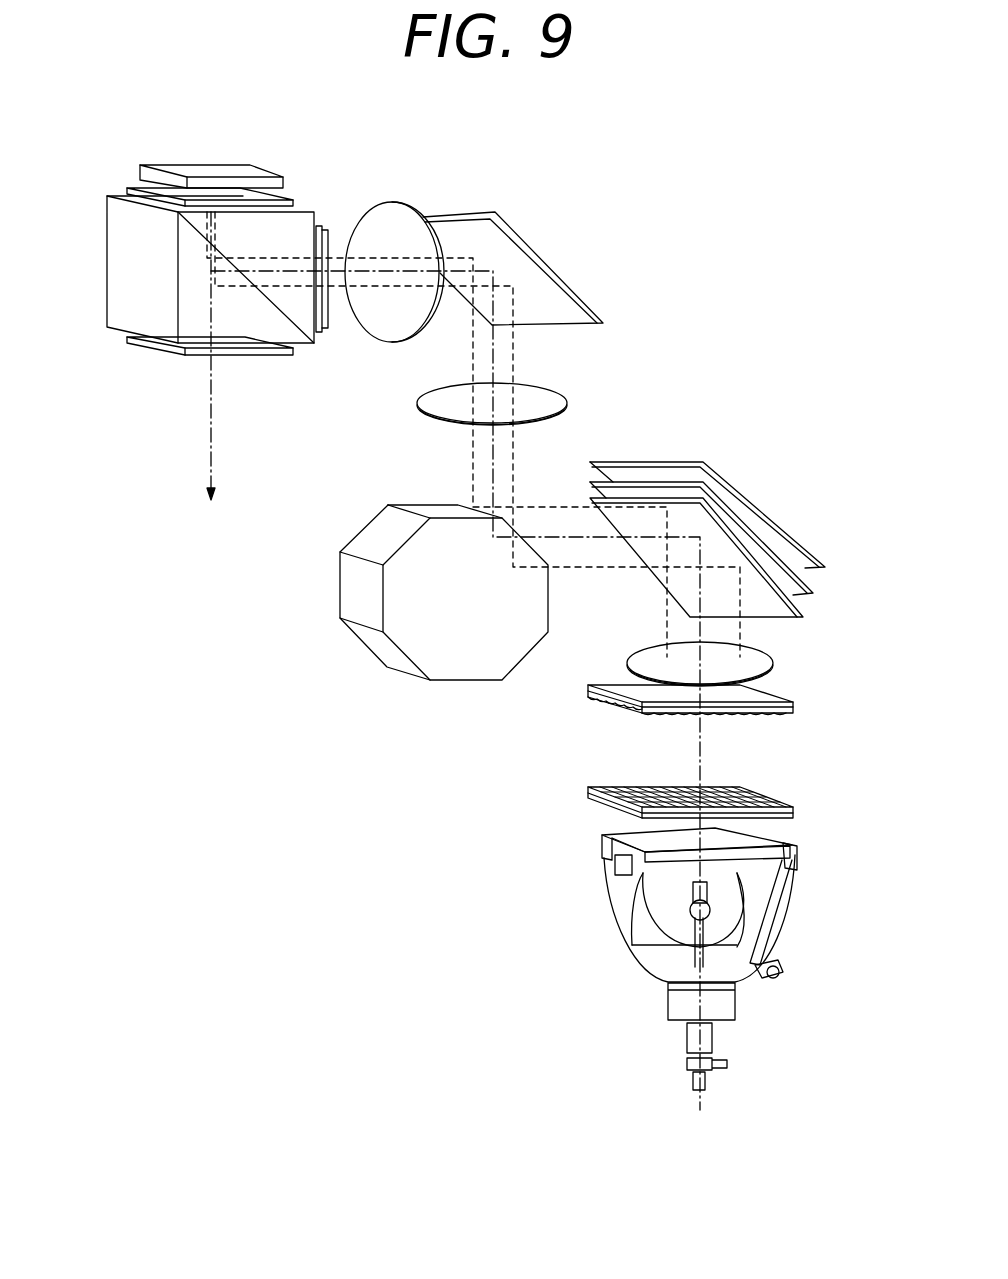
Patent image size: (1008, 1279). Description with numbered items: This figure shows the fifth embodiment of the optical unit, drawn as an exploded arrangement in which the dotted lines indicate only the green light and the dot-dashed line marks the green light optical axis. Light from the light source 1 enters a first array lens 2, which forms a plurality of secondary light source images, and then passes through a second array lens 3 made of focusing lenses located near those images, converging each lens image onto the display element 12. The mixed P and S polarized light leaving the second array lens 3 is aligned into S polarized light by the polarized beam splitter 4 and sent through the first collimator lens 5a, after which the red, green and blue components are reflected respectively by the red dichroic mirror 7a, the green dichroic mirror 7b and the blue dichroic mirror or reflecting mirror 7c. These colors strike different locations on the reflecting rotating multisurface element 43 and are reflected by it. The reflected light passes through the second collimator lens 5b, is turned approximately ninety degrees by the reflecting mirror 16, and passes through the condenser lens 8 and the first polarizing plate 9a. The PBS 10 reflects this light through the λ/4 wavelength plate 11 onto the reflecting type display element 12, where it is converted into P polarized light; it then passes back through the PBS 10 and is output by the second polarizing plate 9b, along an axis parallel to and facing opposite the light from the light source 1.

The light source 1 is at (770, 903).
The first array lens 2 is at (790, 797).
The second array lens 3 is at (793, 714).
The polarized beam splitter 4 is at (768, 693).
The first collimator lens 5a is at (780, 662).
The second collimator lens 5b is at (565, 398).
The red dichroic mirror 7a is at (787, 622).
The green dichroic mirror 7b is at (797, 597).
The blue dichroic mirror 7c is at (813, 567).
The condenser lens 8 is at (399, 214).
The first polarizing plate 9a is at (326, 232).
The second polarizing plate 9b is at (147, 348).
The PBS 10 is at (117, 292).
The λ/4 wavelength plate 11 is at (140, 183).
The reflecting type display element 12 is at (197, 167).
The reflecting mirror 16 is at (518, 244).
The reflecting rotating multisurface element 43 is at (375, 652).